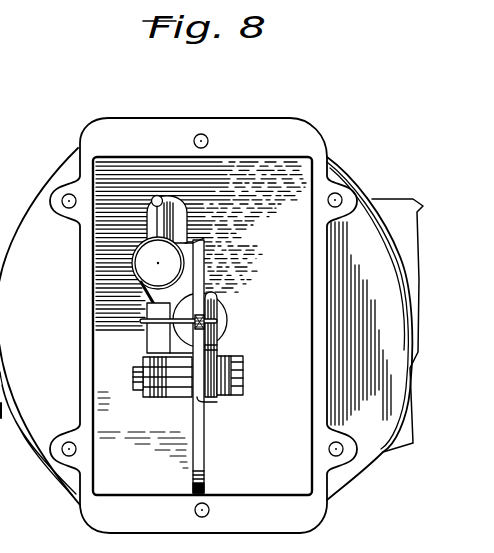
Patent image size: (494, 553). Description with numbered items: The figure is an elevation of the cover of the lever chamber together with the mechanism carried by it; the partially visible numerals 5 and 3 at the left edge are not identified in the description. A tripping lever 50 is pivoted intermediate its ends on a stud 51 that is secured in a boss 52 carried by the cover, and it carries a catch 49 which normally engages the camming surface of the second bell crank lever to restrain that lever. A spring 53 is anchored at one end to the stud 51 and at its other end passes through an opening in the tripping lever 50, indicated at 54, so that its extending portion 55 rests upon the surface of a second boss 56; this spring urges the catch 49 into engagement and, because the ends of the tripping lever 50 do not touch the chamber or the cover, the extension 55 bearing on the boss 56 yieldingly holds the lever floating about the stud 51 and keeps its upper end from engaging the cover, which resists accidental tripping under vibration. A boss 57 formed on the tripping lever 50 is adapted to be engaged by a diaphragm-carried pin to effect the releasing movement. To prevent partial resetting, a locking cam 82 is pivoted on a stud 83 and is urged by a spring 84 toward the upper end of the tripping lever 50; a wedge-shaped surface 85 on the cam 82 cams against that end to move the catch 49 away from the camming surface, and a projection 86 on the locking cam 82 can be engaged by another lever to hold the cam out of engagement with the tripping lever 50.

The housing 5 is at (40, 326).
The flange 3 is at (38, 433).
The catch 49 is at (204, 483).
The tripping lever 50 is at (197, 445).
The stud 51 is at (240, 372).
The boss 52 is at (147, 399).
The spring 53 is at (216, 352).
The opening in the tripping lever 54 is at (200, 313).
The extending portion of the spring 55 is at (140, 318).
The second boss 56 is at (147, 337).
The boss 57 is at (213, 317).
The locking cam 82 is at (143, 212).
The stud 83 is at (143, 259).
The spring 84 is at (131, 267).
The wedge-shaped surface 85 is at (170, 199).
The projection 86 is at (157, 196).